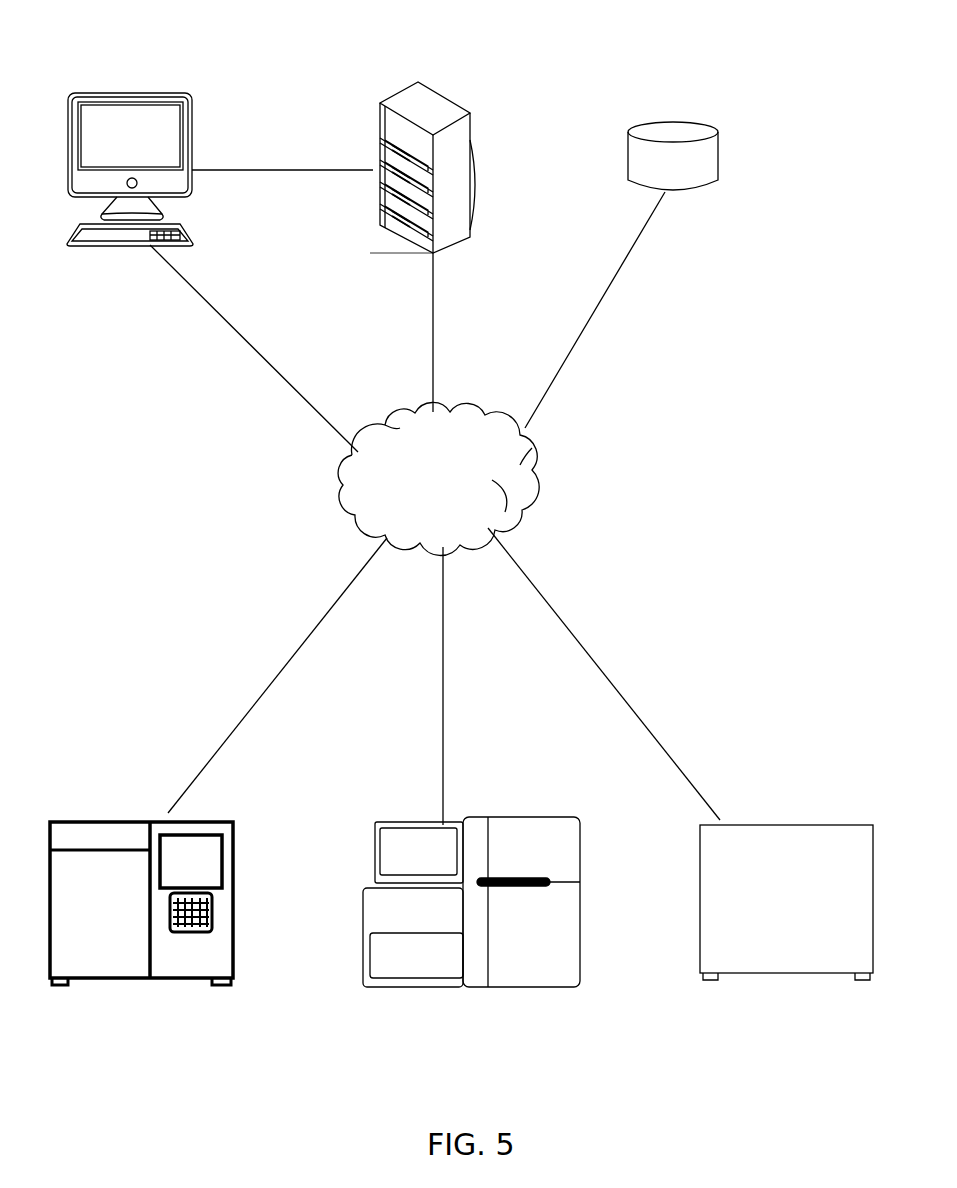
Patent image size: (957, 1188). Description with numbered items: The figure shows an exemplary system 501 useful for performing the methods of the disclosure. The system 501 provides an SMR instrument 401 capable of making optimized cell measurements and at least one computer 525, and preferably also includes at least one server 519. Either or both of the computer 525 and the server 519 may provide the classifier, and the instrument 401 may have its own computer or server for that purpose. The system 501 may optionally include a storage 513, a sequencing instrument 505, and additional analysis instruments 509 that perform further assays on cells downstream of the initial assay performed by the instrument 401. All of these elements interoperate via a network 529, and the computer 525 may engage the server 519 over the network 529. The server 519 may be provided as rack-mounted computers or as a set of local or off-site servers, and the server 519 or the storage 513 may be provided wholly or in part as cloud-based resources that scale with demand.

The system 501 is at (498, 50).
The computer 525 is at (192, 123).
The server 519 is at (473, 132).
The storage 513 is at (720, 152).
The network 529 is at (530, 472).
The SMR instrument 401 is at (230, 822).
The sequencing instrument 505 is at (525, 813).
The additional analysis instruments 509 is at (772, 822).